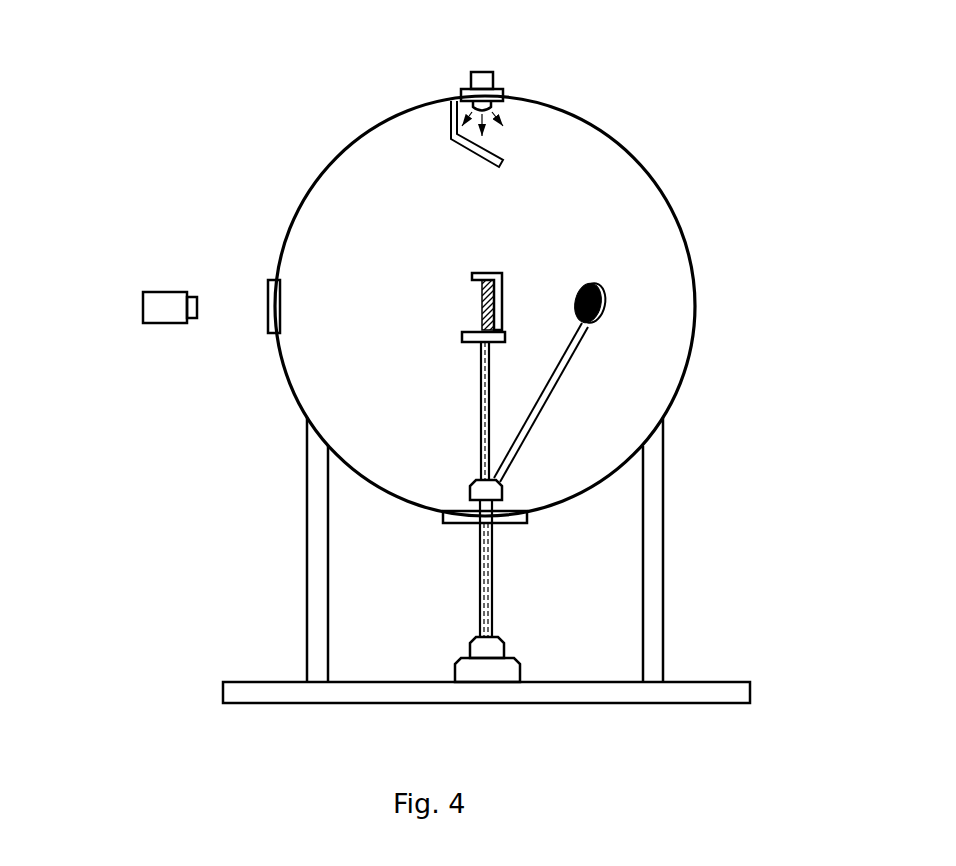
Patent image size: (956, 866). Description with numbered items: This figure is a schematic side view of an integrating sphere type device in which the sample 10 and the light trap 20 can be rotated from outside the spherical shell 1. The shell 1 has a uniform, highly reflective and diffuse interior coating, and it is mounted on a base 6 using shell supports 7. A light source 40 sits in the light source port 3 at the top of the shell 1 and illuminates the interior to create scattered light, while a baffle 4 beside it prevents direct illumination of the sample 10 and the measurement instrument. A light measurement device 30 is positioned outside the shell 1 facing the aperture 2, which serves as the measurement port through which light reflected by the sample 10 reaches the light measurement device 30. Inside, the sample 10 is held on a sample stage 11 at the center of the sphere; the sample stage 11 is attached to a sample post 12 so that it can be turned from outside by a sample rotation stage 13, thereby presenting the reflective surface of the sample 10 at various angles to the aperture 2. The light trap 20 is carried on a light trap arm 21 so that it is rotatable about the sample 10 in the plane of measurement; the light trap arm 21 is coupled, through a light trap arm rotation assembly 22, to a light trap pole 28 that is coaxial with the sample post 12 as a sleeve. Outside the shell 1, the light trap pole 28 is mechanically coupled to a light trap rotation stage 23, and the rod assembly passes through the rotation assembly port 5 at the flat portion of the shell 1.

The spherical shell 1 is at (387, 500).
The aperture 2 is at (262, 338).
The light source port 3 is at (455, 82).
The baffle 4 is at (442, 122).
The rotation assembly port 5 is at (522, 528).
The base 6 is at (528, 707).
The shell supports 7 is at (303, 661).
The sample 10 is at (480, 299).
The sample stage 11 is at (500, 270).
The sample post 12 is at (480, 395).
The sample rotation stage 13 is at (455, 657).
The light trap 20 is at (607, 282).
The light trap arm 21 is at (585, 358).
The light trap arm rotation assembly 22 is at (508, 493).
The light trap rotation stage 23 is at (507, 637).
The light trap pole 28 is at (480, 577).
The light measurement device 30 is at (168, 335).
The light source 40 is at (503, 72).